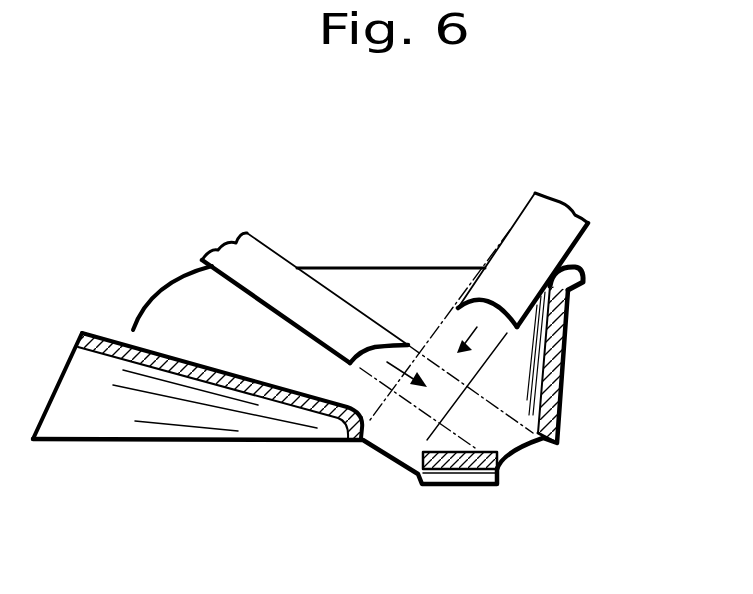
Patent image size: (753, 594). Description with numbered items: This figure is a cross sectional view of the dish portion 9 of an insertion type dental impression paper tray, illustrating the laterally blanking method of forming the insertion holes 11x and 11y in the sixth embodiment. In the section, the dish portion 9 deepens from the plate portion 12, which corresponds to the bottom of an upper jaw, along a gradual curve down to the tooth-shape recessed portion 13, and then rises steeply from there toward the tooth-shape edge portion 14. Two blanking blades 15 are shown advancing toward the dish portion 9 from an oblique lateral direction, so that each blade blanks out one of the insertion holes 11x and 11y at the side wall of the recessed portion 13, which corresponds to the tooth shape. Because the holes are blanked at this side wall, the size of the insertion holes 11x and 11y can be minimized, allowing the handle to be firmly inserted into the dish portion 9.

The dish portion 9 is at (100, 427).
The insertion hole 11x is at (508, 453).
The insertion hole 11y is at (397, 460).
The plate portion 12 is at (128, 345).
The tooth-shape recessed portion 13 is at (463, 480).
The tooth-shape edge portion 14 is at (583, 272).
The blanking blades 15 is at (242, 250).